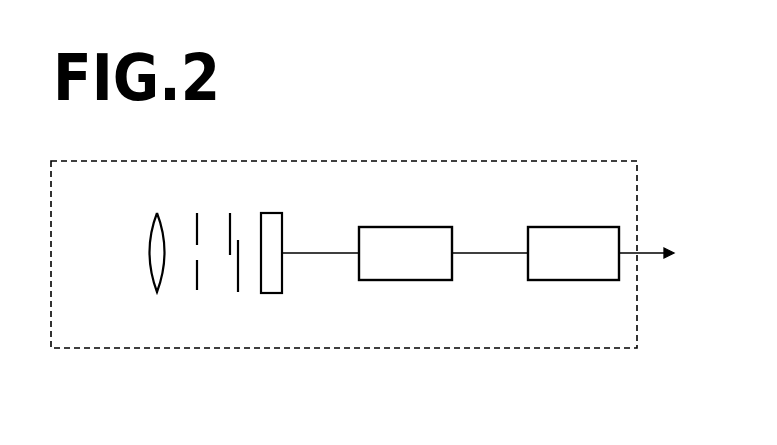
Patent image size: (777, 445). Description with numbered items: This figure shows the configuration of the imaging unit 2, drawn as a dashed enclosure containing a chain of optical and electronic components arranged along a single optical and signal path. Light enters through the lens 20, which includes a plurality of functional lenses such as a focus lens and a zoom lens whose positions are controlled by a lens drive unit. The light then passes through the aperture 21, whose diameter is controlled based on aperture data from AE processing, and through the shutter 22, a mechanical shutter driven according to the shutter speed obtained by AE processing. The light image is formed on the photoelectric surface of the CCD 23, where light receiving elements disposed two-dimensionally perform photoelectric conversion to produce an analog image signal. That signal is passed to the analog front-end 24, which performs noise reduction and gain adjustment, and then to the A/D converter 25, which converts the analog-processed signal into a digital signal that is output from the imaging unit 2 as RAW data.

The imaging unit 2 is at (577, 160).
The lens 20 is at (157, 213).
The aperture 21 is at (197, 290).
The shutter 22 is at (230, 213).
The CCD 23 is at (272, 293).
The analog front-end (AFE) 24 is at (396, 281).
The A/D converter 25 is at (563, 281).